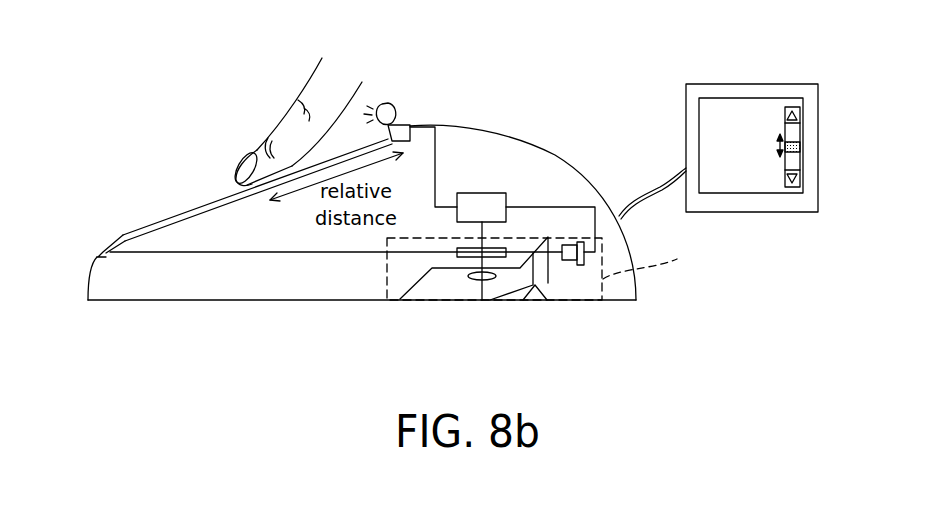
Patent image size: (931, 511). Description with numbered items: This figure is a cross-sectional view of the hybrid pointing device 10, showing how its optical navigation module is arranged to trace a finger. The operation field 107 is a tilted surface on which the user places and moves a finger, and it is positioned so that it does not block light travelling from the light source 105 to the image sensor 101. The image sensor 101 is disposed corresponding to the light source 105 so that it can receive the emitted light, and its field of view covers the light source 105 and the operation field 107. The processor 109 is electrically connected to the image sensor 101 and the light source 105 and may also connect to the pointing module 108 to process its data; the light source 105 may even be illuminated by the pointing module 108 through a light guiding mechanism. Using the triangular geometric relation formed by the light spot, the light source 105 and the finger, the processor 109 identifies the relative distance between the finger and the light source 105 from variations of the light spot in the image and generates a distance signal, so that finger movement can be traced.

The hybrid pointing device 10 is at (649, 68).
The image sensor 101 is at (398, 127).
The light source 105 is at (393, 103).
The operation field 107 is at (213, 203).
The pointing module 108 is at (662, 257).
The processor 109 is at (498, 193).